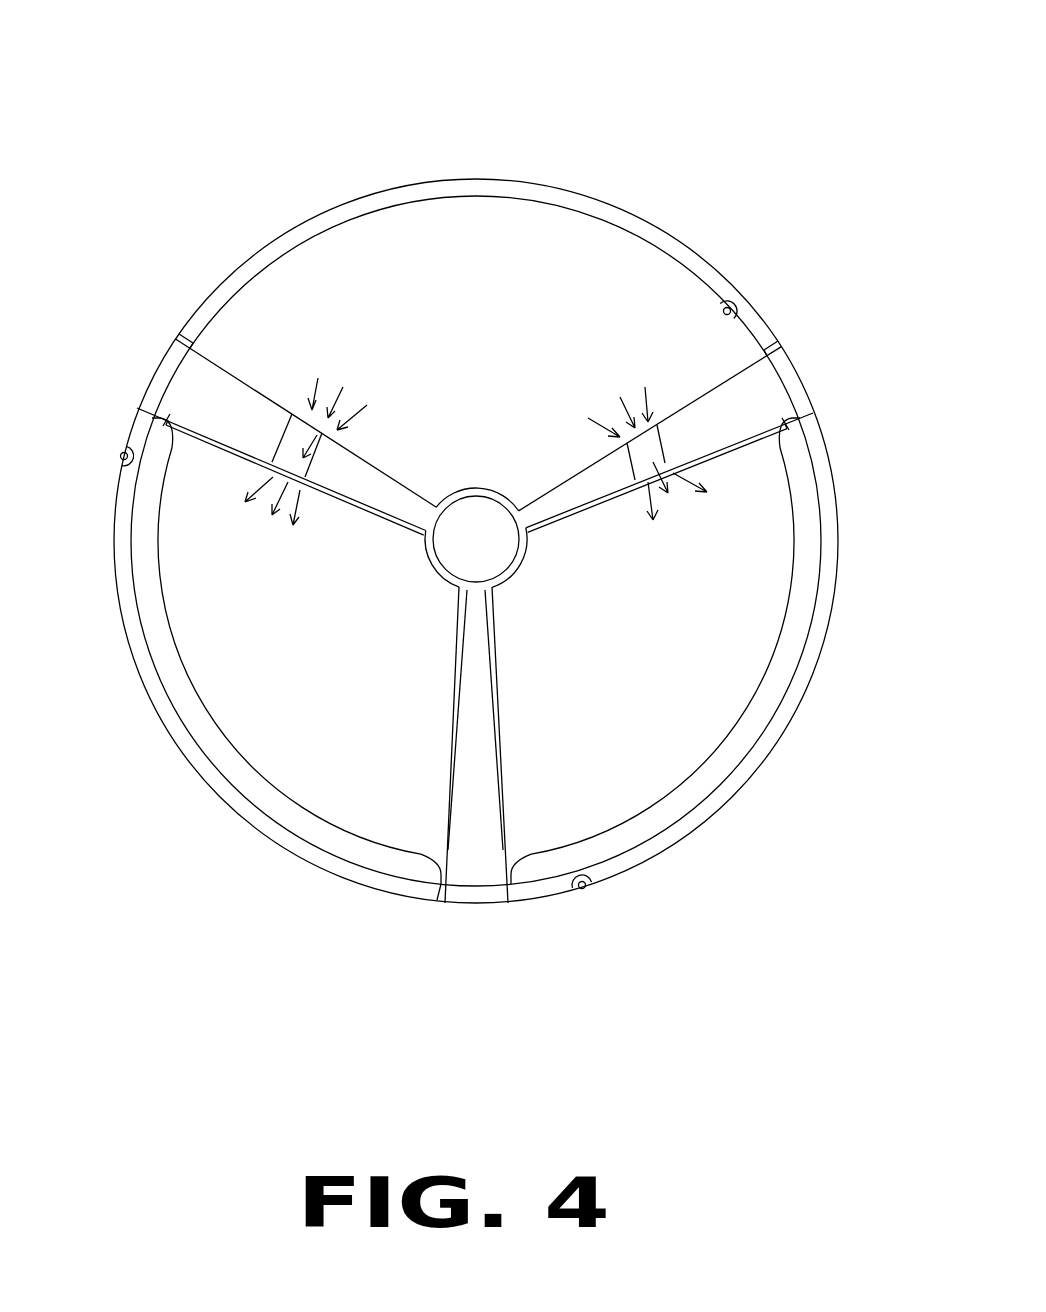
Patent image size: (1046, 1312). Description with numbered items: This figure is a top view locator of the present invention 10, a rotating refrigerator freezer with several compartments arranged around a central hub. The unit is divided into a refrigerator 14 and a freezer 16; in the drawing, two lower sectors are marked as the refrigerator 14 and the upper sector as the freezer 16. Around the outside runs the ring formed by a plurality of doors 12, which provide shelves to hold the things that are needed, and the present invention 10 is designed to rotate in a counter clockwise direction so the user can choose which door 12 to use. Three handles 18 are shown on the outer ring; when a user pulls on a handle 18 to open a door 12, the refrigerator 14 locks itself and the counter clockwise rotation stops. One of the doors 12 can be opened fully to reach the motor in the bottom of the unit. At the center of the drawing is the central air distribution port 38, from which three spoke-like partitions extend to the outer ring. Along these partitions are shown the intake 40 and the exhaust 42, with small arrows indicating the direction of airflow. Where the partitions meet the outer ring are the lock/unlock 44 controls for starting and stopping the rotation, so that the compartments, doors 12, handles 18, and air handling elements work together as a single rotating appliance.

The present invention 10 is at (678, 173).
The door 12 is at (479, 180).
The refrigerator 14 is at (368, 663).
The freezer 16 is at (488, 357).
The handle 18 is at (122, 448).
The central air distribution port 38 is at (503, 545).
The intake 40 is at (290, 443).
The exhaust 42 is at (190, 423).
The lock/unlock control 44 is at (186, 338).